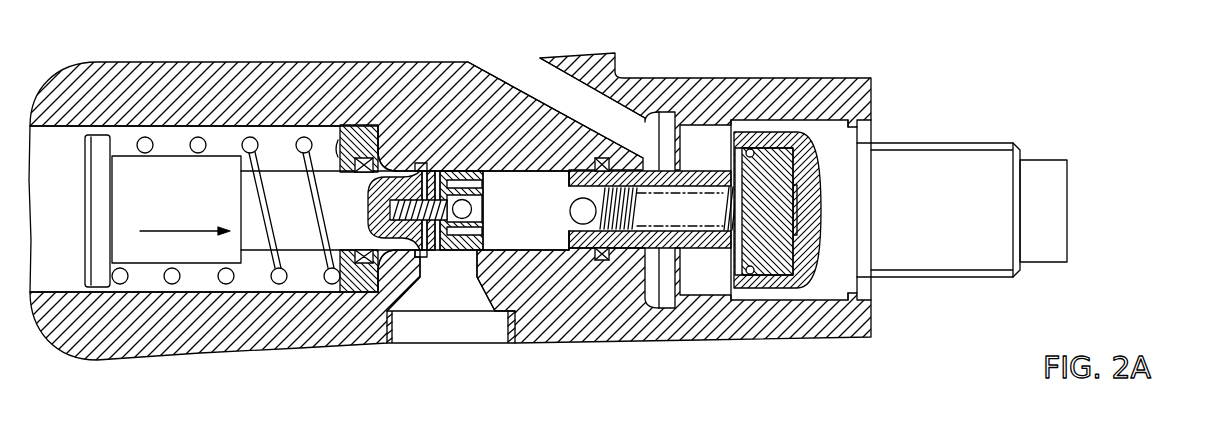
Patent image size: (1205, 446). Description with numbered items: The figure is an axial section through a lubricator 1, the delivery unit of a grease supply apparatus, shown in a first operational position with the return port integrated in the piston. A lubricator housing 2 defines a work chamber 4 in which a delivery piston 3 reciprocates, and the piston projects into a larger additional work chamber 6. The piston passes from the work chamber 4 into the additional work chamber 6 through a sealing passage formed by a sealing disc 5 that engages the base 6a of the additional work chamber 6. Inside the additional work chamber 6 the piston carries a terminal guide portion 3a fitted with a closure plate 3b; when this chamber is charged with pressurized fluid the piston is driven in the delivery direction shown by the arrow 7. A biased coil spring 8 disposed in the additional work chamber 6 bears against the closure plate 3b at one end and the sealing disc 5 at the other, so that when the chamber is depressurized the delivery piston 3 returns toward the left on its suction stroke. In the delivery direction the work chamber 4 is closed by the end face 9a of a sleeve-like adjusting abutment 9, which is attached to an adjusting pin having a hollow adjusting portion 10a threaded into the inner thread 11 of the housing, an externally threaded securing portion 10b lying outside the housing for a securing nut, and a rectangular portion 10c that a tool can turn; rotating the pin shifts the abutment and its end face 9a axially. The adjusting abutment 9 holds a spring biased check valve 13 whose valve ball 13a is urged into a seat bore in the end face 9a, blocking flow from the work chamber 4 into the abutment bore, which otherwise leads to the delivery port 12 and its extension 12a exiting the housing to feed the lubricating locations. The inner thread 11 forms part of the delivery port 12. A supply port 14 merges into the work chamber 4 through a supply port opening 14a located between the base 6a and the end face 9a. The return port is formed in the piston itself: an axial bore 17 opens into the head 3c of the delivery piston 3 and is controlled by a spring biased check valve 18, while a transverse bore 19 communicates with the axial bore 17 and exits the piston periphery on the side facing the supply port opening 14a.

The lubricator 1 is at (910, 354).
The lubricator housing 2 is at (277, 74).
The delivery piston 3 is at (305, 159).
The terminal guide portion 3a is at (125, 177).
The closure plate 3b is at (98, 257).
The head 3c is at (448, 166).
The work chamber 4 is at (520, 201).
The sealing disc 5 is at (357, 132).
The additional work chamber 6 is at (43, 177).
The base of the additional work chamber 6a is at (396, 136).
The arrow indicating delivery direction 7 is at (172, 222).
The coil spring 8 is at (198, 140).
The adjusting abutment 9 is at (637, 146).
The end face 9a is at (570, 171).
The hollow adjusting portion 10a is at (848, 140).
The securing portion 10b is at (978, 167).
The rectangular portion 10c is at (1040, 250).
The inner thread 11 is at (733, 130).
The delivery port 12 is at (599, 208).
The extension of the delivery port 12a is at (612, 110).
The check valve 13 is at (757, 230).
The valve ball 13a is at (577, 217).
The supply port 14 is at (418, 300).
The supply port opening 14a is at (440, 268).
The axial bore 17 is at (472, 212).
The check valve 18 is at (392, 205).
The transverse bore 19 is at (430, 170).